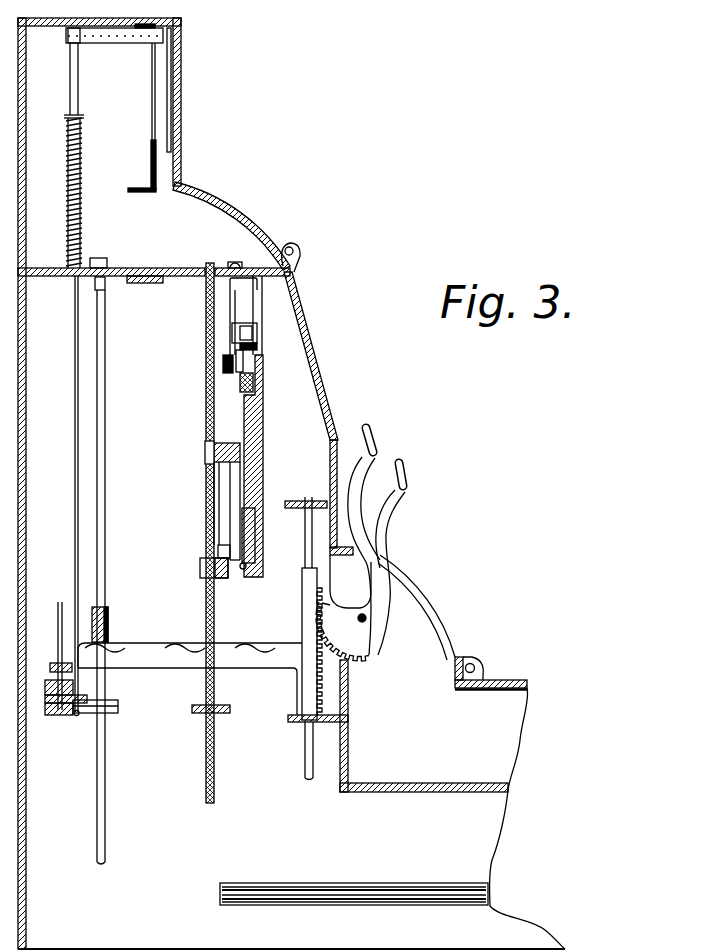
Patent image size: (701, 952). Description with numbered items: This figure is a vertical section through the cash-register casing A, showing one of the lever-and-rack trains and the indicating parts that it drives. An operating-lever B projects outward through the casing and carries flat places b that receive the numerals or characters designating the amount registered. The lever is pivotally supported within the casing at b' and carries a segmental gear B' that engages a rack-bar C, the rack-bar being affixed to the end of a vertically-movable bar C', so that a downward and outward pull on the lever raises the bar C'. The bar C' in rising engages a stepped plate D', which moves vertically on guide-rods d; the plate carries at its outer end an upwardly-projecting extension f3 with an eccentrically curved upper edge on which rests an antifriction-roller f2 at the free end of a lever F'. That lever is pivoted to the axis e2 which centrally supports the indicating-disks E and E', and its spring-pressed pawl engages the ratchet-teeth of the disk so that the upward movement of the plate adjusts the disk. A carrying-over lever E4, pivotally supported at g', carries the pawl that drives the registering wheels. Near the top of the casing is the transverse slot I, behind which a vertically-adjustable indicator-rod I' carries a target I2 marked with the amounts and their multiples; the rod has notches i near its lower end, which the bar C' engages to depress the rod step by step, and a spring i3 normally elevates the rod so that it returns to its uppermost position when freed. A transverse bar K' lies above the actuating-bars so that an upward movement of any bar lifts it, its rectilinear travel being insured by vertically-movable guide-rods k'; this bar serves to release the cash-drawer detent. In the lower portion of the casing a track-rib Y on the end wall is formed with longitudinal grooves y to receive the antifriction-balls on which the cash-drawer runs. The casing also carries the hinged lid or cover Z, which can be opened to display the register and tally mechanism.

The casing A is at (27, 855).
The hinged lid or cover Z is at (324, 372).
The transverse slot or opening I is at (134, 110).
The target I2 is at (171, 123).
The spring i3 is at (80, 221).
The notches i is at (75, 574).
The indicator-rod I' is at (72, 370).
The guide-rods k' is at (111, 577).
The stepped plate D' is at (235, 533).
The indicating-disk E is at (261, 419).
The pivot of carrying-over lever g' is at (260, 322).
The carrying-over lever E4 is at (228, 350).
The indicating-disk E' is at (205, 395).
The axis e2 is at (207, 452).
The lever F' is at (196, 511).
The guide-rods d is at (212, 497).
The upwardly-projecting extension f3 is at (242, 528).
The antifriction-roller f2 is at (218, 549).
The vertically-movable bar C' is at (190, 664).
The transverse bar K' is at (114, 619).
The rack-bar C is at (332, 638).
The segmental gear B' is at (350, 581).
The pivot b' is at (386, 627).
The operating-lever B is at (401, 558).
The flat places b is at (387, 455).
The track-rib Y is at (345, 882).
The longitudinal grooves y is at (322, 898).